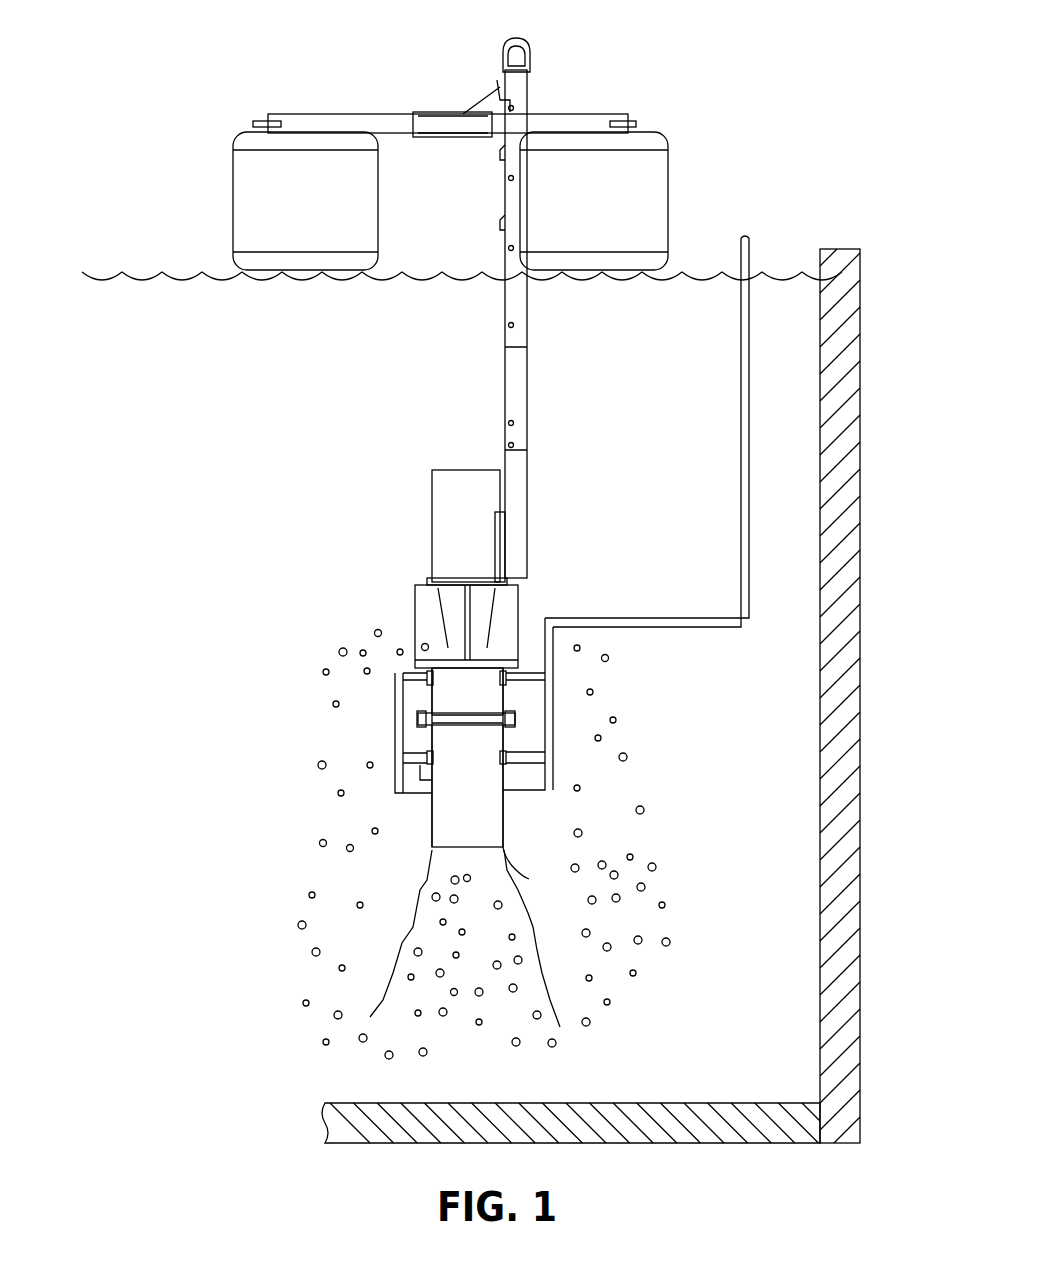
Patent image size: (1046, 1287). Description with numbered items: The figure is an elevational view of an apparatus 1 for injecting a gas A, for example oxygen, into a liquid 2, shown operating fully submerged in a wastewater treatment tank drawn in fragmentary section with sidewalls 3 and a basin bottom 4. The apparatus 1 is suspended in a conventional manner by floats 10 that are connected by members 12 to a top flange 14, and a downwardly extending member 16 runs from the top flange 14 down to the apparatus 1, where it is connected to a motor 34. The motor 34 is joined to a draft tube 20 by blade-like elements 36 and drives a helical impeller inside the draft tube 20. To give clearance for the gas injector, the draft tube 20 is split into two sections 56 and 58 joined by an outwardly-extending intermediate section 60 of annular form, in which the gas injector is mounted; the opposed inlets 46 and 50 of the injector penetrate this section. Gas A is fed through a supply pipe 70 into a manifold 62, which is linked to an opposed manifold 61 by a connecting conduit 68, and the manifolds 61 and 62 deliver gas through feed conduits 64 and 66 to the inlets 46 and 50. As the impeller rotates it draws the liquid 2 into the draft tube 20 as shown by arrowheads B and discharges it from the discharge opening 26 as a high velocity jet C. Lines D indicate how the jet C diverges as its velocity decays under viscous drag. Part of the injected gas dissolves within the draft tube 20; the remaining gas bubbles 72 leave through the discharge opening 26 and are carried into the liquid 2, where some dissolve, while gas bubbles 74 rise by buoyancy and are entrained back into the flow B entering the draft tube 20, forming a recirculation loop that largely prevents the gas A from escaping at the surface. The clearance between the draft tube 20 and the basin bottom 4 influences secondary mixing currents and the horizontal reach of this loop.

The apparatus 1 is at (300, 548).
The liquid 2 is at (396, 389).
The sidewalls 3 is at (850, 484).
The basin bottom 4 is at (710, 1116).
The floats 10 is at (250, 190).
The members 12 is at (360, 115).
The top flange 14 is at (497, 102).
The downwardly extending member 16 is at (530, 319).
The draft tube 20 is at (512, 816).
The discharge opening 26 is at (508, 862).
The motor 34 is at (448, 525).
The blade-like elements 36 is at (428, 620).
The inlets 46 is at (428, 680).
The inlets 50 is at (416, 722).
The draft tube section 56 is at (506, 697).
The draft tube section 58 is at (512, 832).
The outwardly-extending intermediate section 60 is at (472, 727).
The manifold 61 is at (366, 775).
The manifold 62 is at (568, 775).
The feed conduits 64 is at (397, 675).
The feed conduits 66 is at (535, 676).
The connecting conduit 68 is at (430, 798).
The supply pipe 70 is at (740, 476).
The gas bubbles 72 is at (491, 957).
The gas bubbles 74 is at (347, 912).
The gas A is at (745, 221).
The liquid flow into draft tube B is at (448, 648).
The discharged liquid jet C is at (465, 995).
The jet divergence lines D is at (412, 935).